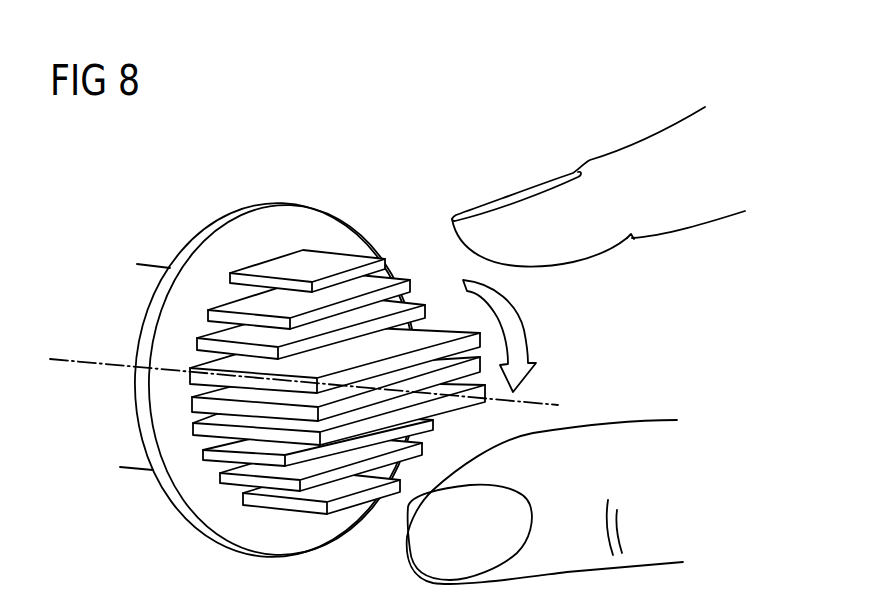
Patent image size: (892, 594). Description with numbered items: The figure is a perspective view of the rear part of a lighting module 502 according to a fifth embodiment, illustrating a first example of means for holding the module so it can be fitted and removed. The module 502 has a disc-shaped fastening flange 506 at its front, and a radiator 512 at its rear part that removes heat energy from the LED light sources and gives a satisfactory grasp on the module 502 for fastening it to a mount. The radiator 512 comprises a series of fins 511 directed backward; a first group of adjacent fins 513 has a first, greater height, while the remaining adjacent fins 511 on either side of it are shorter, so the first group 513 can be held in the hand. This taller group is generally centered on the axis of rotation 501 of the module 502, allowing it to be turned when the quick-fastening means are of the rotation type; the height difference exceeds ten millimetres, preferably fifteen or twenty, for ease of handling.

The axis of rotation 501 is at (90, 360).
The lighting module 502 is at (272, 352).
The fastening flange 506 is at (267, 222).
The plate 511 is at (387, 290).
The radiator 512 is at (337, 340).
The first group of adjacent fins 513 is at (437, 337).